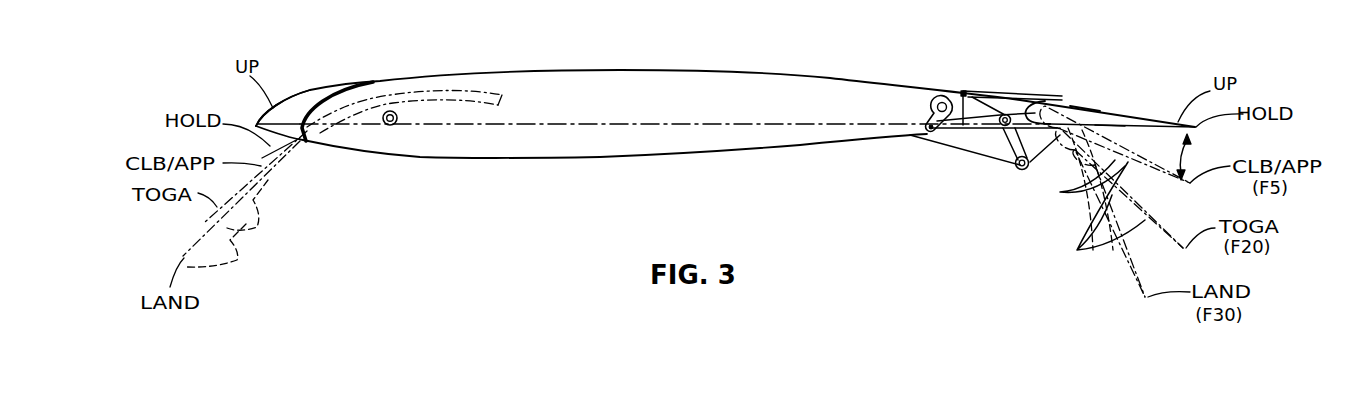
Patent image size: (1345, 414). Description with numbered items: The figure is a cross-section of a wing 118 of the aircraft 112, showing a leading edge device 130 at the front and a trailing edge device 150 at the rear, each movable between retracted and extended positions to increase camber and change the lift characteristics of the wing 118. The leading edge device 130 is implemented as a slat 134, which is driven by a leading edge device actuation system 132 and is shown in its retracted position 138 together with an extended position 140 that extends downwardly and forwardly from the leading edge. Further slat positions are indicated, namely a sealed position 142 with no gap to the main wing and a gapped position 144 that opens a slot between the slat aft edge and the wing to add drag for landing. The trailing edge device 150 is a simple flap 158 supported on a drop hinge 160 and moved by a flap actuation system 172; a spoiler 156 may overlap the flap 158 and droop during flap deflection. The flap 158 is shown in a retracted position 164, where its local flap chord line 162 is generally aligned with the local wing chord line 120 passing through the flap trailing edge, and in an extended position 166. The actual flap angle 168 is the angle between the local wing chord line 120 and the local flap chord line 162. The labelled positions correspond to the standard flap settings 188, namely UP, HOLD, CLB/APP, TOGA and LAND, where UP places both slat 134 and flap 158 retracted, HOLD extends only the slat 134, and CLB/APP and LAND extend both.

The aircraft wing 112 is at (322, 409).
The wing 118 is at (600, 70).
The local wing chord line 120 is at (685, 124).
The leading edge device 130 is at (340, 86).
The leading edge device actuation system 132 is at (390, 111).
The slat 134 is at (300, 92).
The retracted position 138 is at (273, 135).
The extended position 140 is at (267, 157).
The sealed position 142 is at (257, 201).
The gapped position 144 is at (233, 244).
The trailing edge device 150 is at (1053, 108).
The spoiler 156 is at (966, 91).
The flap 158 is at (1086, 108).
The drop hinge 160 is at (1003, 165).
The local flap chord line 162 is at (1106, 125).
The retracted position 164 is at (1037, 112).
The extended position 166 is at (1062, 191).
The flap angle 168 is at (1181, 136).
The flap actuation system 172 is at (942, 97).
The standard flap settings 188 is at (1078, 249).